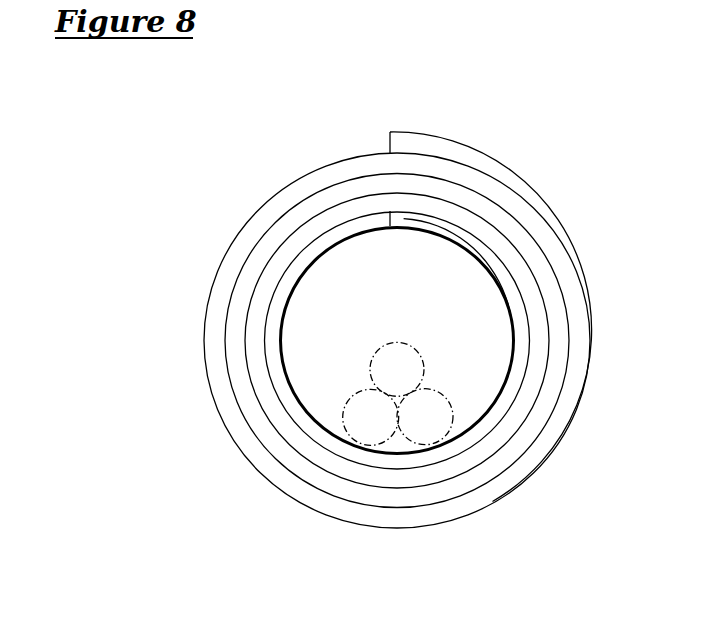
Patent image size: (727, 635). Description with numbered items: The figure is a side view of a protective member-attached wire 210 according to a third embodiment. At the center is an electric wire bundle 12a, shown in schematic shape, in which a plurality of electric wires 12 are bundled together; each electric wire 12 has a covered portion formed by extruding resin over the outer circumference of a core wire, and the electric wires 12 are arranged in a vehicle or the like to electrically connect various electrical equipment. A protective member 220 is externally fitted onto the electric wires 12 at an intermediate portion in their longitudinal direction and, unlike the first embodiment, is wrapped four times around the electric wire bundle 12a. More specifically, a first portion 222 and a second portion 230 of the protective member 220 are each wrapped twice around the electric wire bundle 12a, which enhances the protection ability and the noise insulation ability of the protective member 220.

The protective member-attached wire 210 is at (322, 117).
The protective member 220 is at (540, 190).
The second portion 230 is at (362, 188).
The first portion 222 is at (407, 187).
The electric wire 12 is at (437, 402).
The electric wire bundle 12a is at (473, 405).